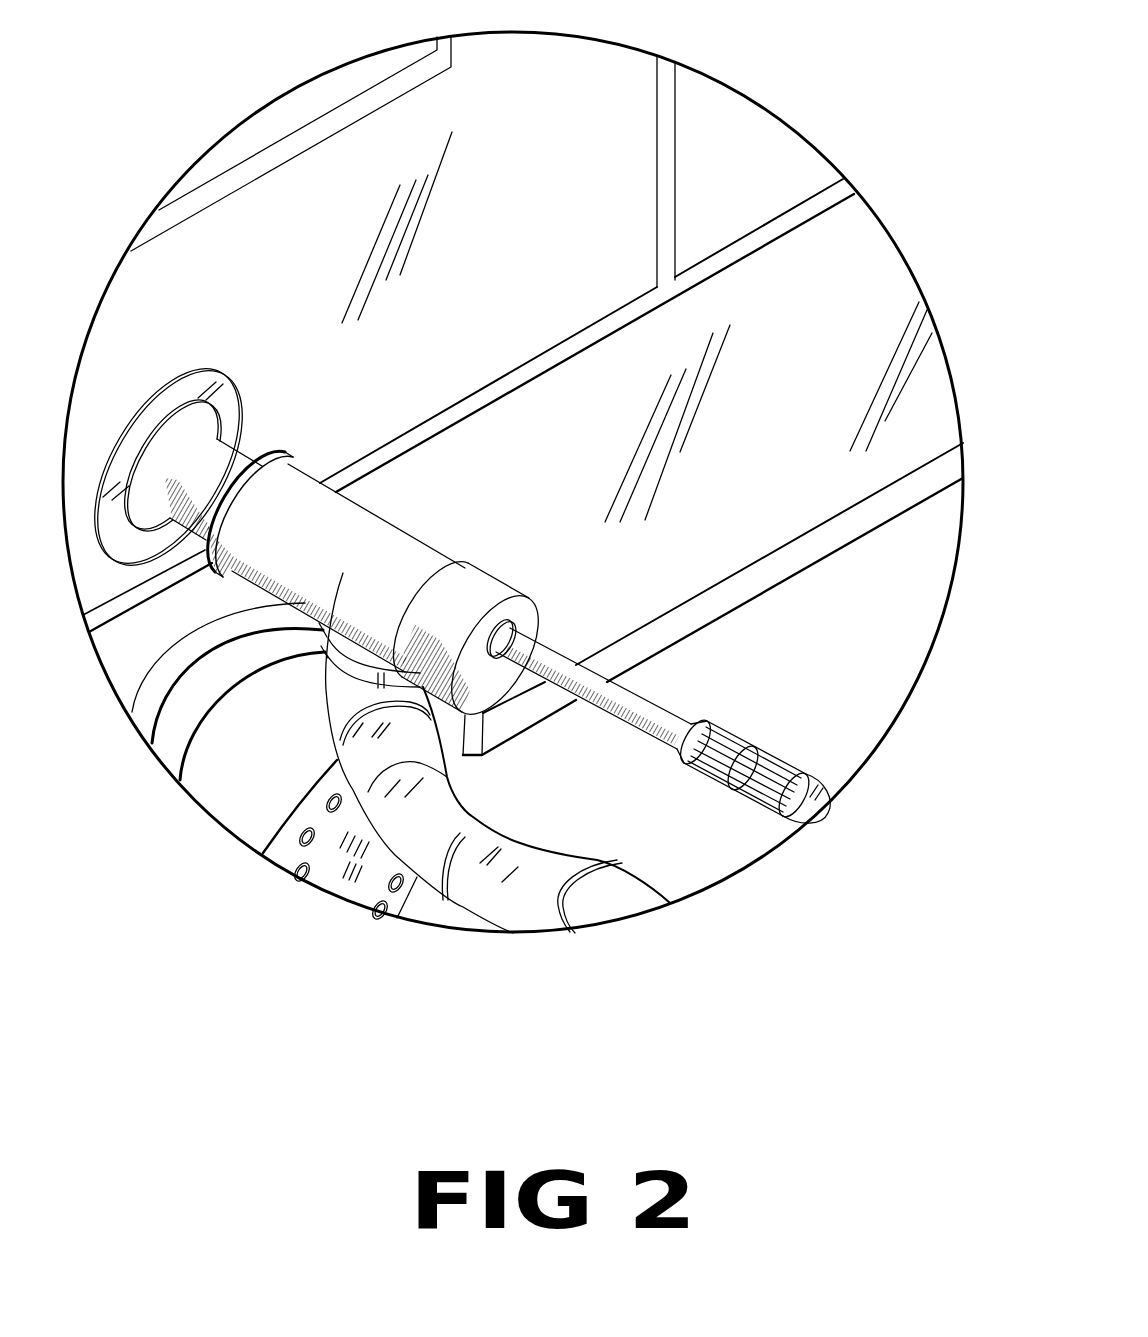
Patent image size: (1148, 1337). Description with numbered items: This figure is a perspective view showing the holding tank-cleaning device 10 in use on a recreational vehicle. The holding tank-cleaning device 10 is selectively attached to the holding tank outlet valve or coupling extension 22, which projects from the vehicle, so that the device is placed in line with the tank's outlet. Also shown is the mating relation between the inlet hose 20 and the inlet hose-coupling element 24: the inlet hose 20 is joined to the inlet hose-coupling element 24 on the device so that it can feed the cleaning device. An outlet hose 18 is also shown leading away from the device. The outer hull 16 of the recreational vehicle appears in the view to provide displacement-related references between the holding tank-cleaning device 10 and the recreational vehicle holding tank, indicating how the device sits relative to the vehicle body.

The holding tank-cleaning device 10 is at (322, 645).
The outer hull 16 is at (560, 134).
The outlet hose 18 is at (593, 898).
The inlet hose 20 is at (767, 808).
The holding tank outlet valve or coupling extension 22 is at (187, 380).
The inlet hose-coupling element 24 is at (703, 786).